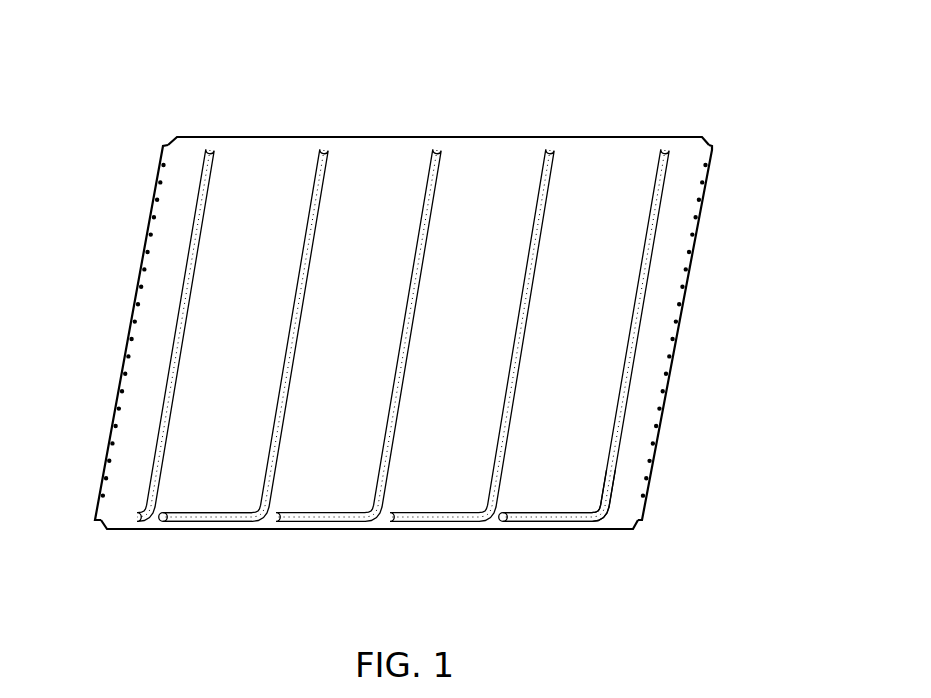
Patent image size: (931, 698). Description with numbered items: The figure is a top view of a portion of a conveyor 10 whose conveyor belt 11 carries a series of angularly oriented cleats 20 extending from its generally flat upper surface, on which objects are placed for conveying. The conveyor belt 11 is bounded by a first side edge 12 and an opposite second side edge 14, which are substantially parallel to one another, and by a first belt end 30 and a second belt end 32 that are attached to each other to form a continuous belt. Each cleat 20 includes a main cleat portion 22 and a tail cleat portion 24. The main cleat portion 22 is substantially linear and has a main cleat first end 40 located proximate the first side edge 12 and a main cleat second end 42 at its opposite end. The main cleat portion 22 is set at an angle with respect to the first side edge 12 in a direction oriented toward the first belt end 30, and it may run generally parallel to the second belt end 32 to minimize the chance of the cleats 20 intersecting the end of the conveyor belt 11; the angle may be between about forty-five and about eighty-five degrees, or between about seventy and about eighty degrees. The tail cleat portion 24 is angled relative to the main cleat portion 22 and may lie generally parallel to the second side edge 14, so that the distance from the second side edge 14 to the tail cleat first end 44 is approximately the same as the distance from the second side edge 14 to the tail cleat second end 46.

The conveyor 10 is at (430, 301).
The conveyor belt 11 is at (395, 338).
The first side edge 12 is at (604, 137).
The second side edge 14 is at (353, 532).
The cleat 20 is at (452, 335).
The main cleat portion 22 is at (267, 335).
The tail cleat portion 24 is at (205, 521).
The first belt end 30 is at (108, 445).
The second belt end 32 is at (685, 315).
The main cleat first end 40 is at (633, 371).
The main cleat second end 42 is at (610, 483).
The tail cleat first end 44 is at (580, 521).
The tail cleat second end 46 is at (513, 521).